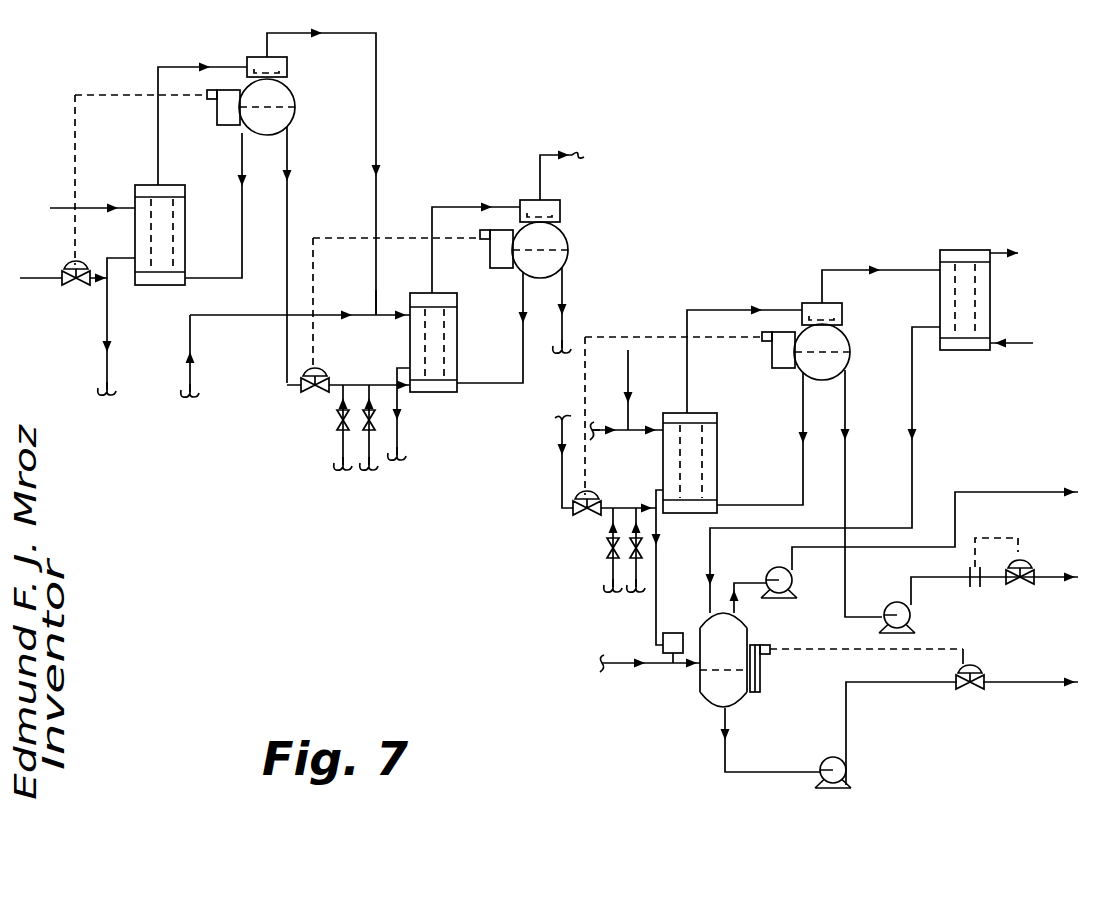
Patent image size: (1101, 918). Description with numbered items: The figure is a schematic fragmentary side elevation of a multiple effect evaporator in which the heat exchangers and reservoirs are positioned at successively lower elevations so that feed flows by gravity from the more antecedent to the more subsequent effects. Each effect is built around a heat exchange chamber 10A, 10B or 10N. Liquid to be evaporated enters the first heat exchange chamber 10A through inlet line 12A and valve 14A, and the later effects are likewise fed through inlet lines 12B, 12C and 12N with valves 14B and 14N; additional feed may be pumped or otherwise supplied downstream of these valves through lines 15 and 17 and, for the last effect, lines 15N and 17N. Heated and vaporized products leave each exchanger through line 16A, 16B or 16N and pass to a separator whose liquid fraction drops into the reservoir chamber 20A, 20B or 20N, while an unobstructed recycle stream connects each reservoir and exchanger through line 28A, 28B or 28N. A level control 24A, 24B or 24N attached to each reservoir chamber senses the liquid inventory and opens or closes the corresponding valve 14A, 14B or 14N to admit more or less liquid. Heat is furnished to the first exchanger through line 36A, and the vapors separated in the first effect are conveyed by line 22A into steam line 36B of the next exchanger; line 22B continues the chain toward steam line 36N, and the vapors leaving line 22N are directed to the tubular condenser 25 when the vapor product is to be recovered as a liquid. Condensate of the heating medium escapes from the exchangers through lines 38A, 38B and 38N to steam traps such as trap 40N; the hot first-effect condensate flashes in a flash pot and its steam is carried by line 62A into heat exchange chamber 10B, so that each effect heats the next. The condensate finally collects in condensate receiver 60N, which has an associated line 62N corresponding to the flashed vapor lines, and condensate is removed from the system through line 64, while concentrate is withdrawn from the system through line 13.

The heat exchange chamber 10A is at (186, 210).
The heat exchange chamber 10B is at (410, 345).
The heat exchange chamber 10N is at (719, 442).
The inlet line 12A is at (42, 277).
The inlet line 12B is at (288, 203).
The inlet line 12C is at (565, 284).
The inlet line 12N is at (561, 473).
The concentrate withdrawal line 13 is at (846, 405).
The valve 14A is at (78, 289).
The valve 14B is at (313, 392).
The valve 14N is at (578, 521).
The additional feed line 15 is at (338, 419).
The additional feed line 15N is at (600, 550).
The product line 16A is at (200, 58).
The product line 16B is at (461, 190).
The product line 16N is at (737, 297).
The additional feed line 17 is at (384, 414).
The additional feed line 17N is at (633, 560).
The reservoir chamber 20A is at (295, 113).
The reservoir chamber 20B is at (570, 246).
The reservoir chamber 20N is at (850, 338).
The vapor line 22A is at (356, 34).
The vapor line 22B is at (545, 185).
The vapor line 22N is at (857, 271).
The level control 24A is at (214, 123).
The level control 24B is at (491, 270).
The level control 24N is at (769, 365).
The tubular condenser 25 is at (992, 290).
The recycle line 28A is at (212, 271).
The recycle line 28B is at (488, 382).
The recycle line 28N is at (757, 505).
The heating medium line 36A is at (92, 205).
The steam line 36B is at (377, 147).
The steam line 36N is at (628, 372).
The condensate line 38A is at (103, 377).
The condensate line 38B is at (400, 436).
The condensate line 38N is at (657, 562).
The steam trap 40N is at (677, 630).
The condensate receiver 60N is at (699, 692).
The flashed vapor line 62A is at (224, 317).
The flashed vapor line 62N is at (748, 581).
The condensate removal line 64 is at (772, 775).